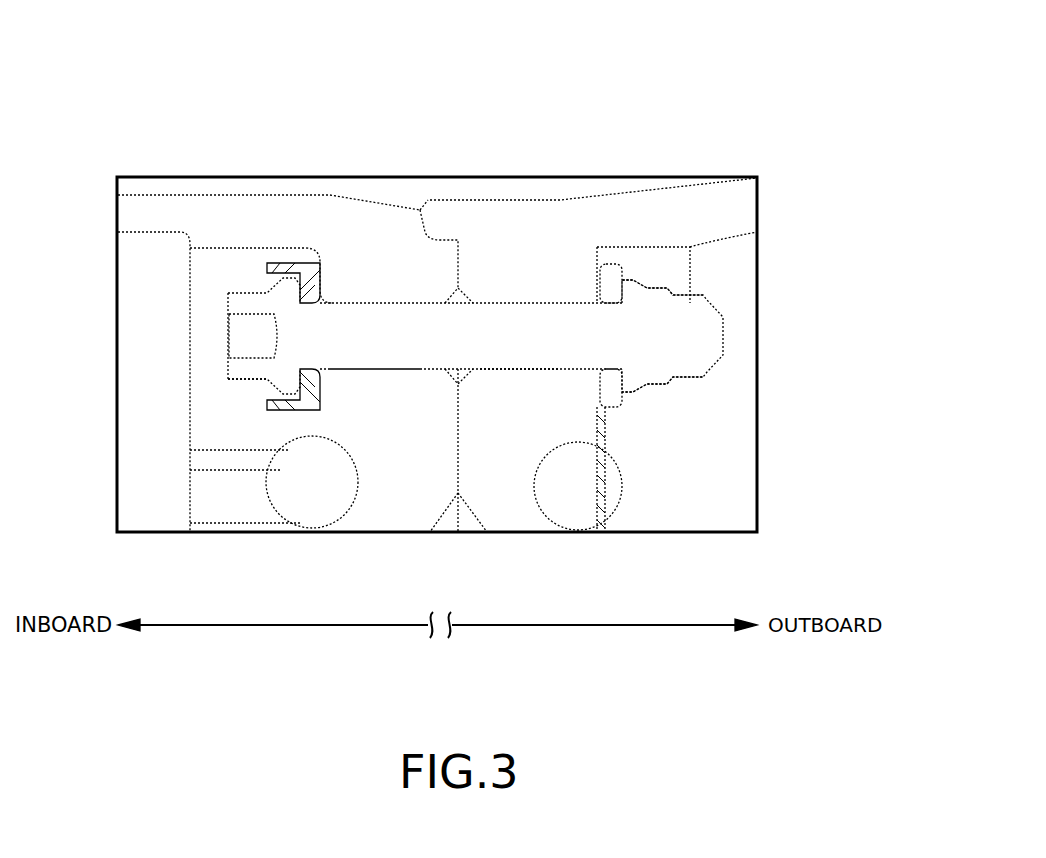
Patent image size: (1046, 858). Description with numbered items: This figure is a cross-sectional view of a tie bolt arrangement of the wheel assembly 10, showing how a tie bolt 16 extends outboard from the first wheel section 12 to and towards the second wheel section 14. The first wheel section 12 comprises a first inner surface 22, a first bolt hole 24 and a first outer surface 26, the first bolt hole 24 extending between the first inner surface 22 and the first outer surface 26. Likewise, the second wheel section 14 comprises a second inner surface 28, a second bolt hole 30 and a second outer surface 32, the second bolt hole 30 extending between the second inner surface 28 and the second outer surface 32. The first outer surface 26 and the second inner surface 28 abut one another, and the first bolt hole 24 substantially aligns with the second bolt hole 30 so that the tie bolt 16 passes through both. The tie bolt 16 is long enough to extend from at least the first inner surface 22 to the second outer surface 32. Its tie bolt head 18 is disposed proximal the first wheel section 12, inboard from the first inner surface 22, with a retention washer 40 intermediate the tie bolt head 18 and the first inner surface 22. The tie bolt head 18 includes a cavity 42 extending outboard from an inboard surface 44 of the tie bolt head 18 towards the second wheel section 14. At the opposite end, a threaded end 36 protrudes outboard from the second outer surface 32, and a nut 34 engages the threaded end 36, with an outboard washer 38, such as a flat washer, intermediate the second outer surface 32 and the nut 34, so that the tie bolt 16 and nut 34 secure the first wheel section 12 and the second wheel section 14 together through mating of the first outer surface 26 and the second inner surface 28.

The wheel assembly 10 is at (657, 92).
The first wheel section 12 is at (424, 446).
The second wheel section 14 is at (518, 446).
The tie bolt 16 is at (427, 345).
The tie bolt head 18 is at (243, 287).
The first inner surface 22 is at (310, 430).
The first bolt hole 24 is at (373, 369).
The first outer surface 26 is at (457, 485).
The second inner surface 28 is at (457, 478).
The second bolt hole 30 is at (523, 369).
The second outer surface 32 is at (600, 423).
The nut 34 is at (652, 288).
The threaded end 36 is at (590, 337).
The outboard washer 38 is at (603, 265).
The retention washer 40 is at (303, 257).
The cavity 42 is at (230, 333).
The inboard surface 44 is at (230, 368).